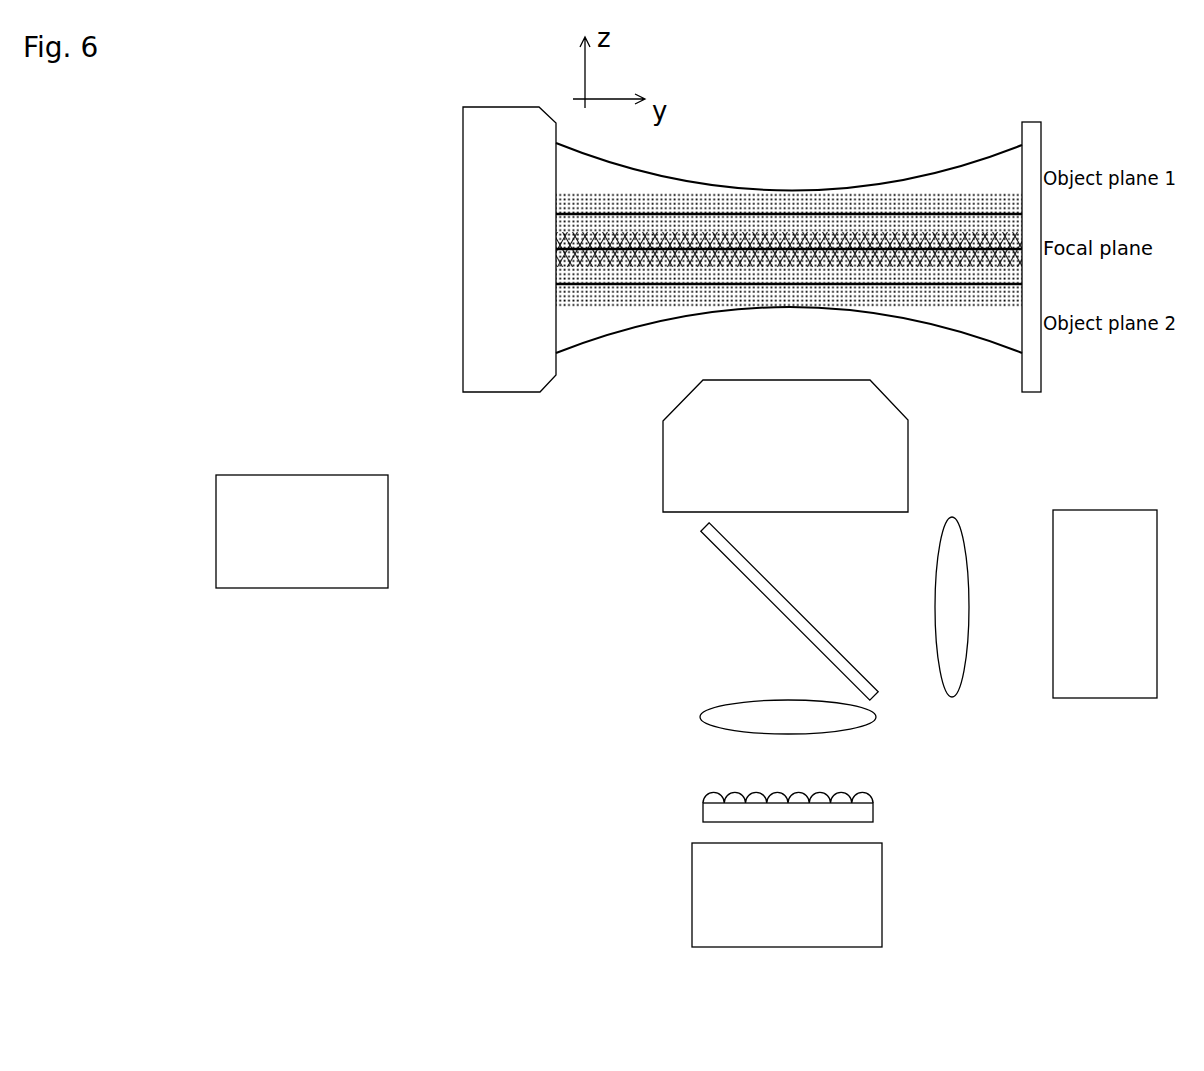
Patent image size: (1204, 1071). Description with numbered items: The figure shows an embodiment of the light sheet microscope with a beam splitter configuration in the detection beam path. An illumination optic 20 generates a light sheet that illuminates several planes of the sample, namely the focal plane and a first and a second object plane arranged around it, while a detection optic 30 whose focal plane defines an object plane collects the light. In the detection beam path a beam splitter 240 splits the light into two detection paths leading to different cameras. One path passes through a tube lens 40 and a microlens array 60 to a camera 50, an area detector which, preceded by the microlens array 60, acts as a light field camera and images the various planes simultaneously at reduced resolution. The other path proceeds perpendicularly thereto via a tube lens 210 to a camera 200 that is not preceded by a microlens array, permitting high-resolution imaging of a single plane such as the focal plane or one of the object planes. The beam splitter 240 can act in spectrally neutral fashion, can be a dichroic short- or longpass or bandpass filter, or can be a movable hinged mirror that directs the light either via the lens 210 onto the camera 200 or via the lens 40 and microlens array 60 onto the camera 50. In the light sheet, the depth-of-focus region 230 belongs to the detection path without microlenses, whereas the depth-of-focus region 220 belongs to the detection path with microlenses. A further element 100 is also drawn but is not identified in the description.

The illumination optic 20 is at (522, 392).
The detection optic 30 is at (670, 458).
The tube lens 40 is at (700, 718).
The camera 50 is at (705, 873).
The microlens array 60 is at (703, 812).
The sample 100 is at (987, 180).
The camera 200 is at (1103, 563).
The tube lens 210 is at (953, 563).
The depth-of-focus region 220 is at (899, 198).
The depth-of-focus region 230 is at (738, 240).
The beam splitter 240 is at (723, 555).